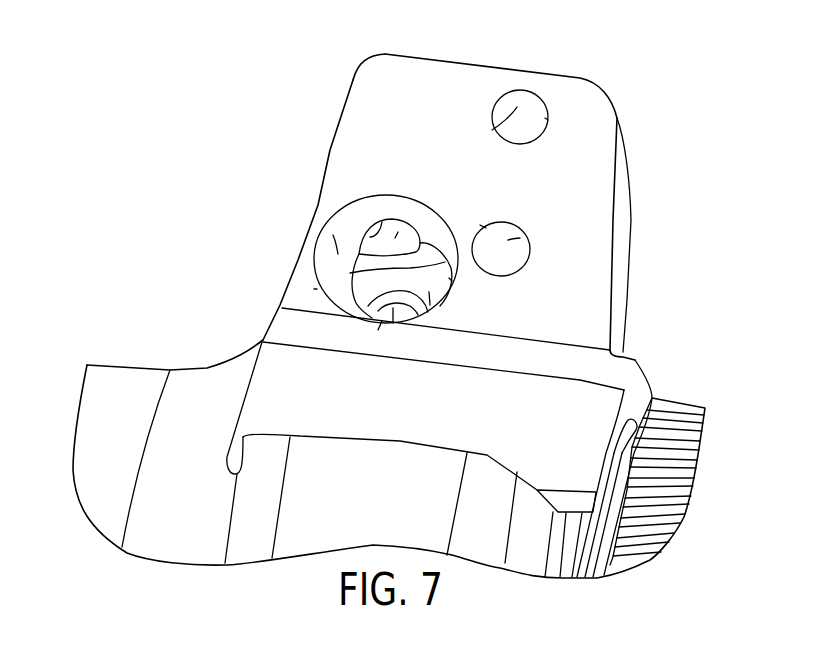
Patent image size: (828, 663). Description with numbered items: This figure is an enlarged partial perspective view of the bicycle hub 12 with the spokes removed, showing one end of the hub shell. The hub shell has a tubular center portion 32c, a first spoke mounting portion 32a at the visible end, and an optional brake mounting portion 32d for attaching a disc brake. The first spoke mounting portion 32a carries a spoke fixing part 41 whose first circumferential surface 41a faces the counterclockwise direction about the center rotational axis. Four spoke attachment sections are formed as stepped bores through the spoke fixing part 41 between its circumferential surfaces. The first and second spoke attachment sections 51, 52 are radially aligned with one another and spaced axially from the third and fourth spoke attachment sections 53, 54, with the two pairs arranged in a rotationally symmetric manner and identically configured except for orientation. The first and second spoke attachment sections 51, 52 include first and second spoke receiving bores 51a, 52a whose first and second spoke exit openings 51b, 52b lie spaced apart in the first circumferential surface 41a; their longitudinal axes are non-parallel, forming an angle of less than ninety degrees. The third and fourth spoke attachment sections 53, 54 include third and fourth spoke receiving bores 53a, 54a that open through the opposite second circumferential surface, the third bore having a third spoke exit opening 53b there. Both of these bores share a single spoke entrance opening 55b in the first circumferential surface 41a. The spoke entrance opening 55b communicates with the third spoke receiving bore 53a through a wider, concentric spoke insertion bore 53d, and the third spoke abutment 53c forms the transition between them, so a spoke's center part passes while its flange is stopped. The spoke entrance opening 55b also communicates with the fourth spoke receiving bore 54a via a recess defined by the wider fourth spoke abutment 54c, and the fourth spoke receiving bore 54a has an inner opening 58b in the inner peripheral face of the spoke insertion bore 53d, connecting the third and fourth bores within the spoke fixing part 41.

The hub 12 is at (675, 220).
The first spoke mounting portion 32a is at (427, 198).
The tubular center portion 32c is at (110, 350).
The brake mounting portion 32d is at (686, 390).
The spoke fixing part 41 is at (500, 62).
The first circumferential surface 41a is at (384, 90).
The first spoke attachment section 51 is at (527, 271).
The first spoke receiving bore 51a is at (508, 240).
The first spoke exit opening 51b is at (486, 228).
The second spoke attachment section 52 is at (490, 105).
The second spoke receiving bore 52a is at (492, 130).
The second spoke exit opening 52b is at (548, 119).
The third spoke attachment section 53 is at (367, 285).
The third spoke receiving bore 53a is at (378, 330).
The third spoke exit opening 53b is at (393, 323).
The third spoke abutment 53c is at (430, 305).
The spoke insertion bore 53d is at (452, 281).
The fourth spoke attachment section 54 is at (420, 224).
The fourth spoke receiving bore 54a is at (395, 238).
The fourth spoke abutment 54c is at (333, 235).
The spoke entrance opening 55b is at (317, 289).
The inner opening 58b is at (370, 237).